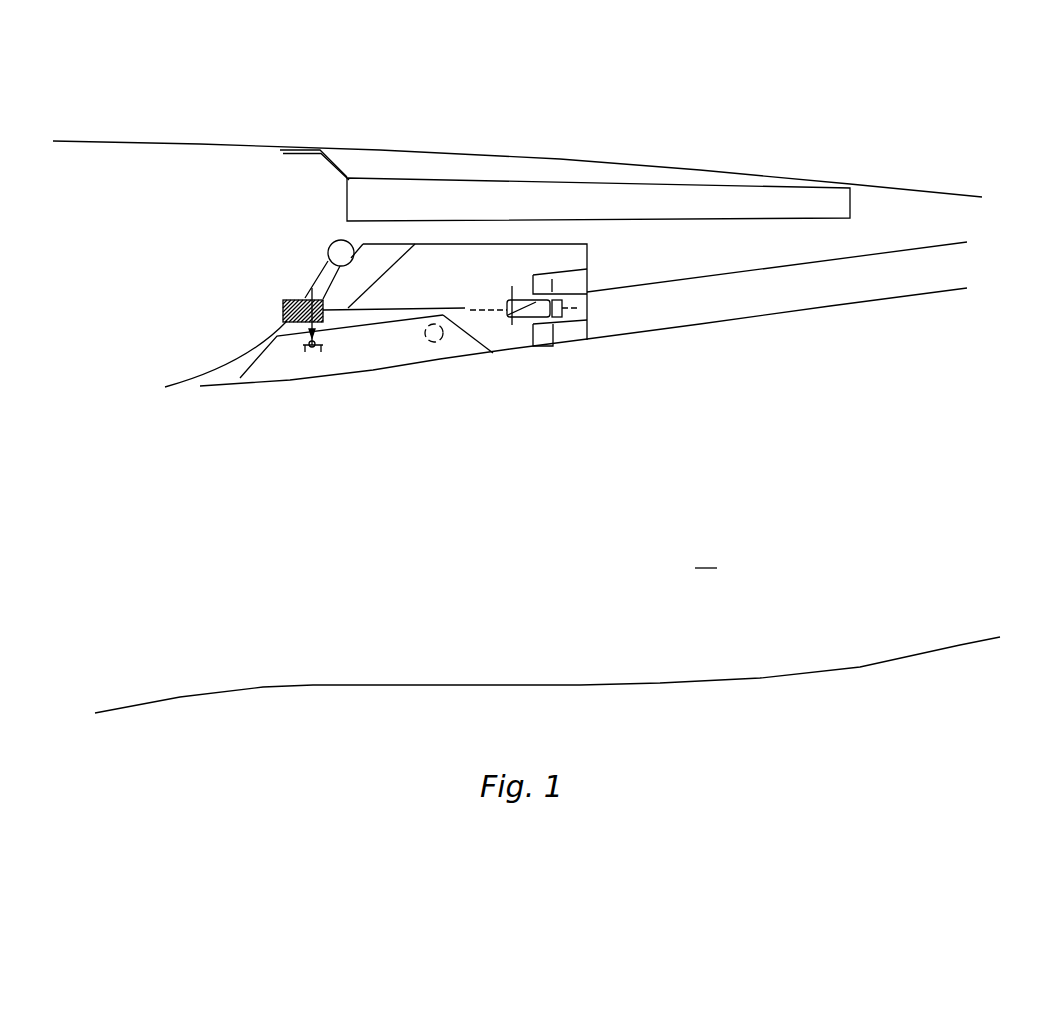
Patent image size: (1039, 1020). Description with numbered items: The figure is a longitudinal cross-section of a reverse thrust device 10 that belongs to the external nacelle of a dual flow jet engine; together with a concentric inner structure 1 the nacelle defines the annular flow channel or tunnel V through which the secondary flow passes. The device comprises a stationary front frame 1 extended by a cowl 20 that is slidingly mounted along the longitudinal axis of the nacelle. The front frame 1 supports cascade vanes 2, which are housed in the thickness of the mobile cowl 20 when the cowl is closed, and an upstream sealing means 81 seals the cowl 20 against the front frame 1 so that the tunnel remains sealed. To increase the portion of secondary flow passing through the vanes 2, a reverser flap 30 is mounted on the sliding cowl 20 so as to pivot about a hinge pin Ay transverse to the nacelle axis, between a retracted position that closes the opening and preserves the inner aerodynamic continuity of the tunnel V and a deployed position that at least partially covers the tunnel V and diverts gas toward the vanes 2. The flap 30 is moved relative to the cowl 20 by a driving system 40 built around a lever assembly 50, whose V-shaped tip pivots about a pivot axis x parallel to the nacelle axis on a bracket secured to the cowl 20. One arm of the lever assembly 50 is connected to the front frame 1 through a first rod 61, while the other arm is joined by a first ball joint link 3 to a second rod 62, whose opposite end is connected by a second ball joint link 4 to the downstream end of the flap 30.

The front frame 1 is at (180, 380).
The cascade vanes 2 is at (387, 197).
The first ball joint link 3 is at (548, 325).
The second ball joint link 4 is at (433, 356).
The reverse thrust device 10 is at (908, 174).
The cowl 20 is at (463, 150).
The reverser flap 30 is at (332, 390).
The driving system 40 is at (498, 338).
The lever assembly 50 is at (527, 323).
The first rod 61 is at (465, 308).
The second rod 62 is at (460, 330).
The upstream sealing means 81 is at (333, 247).
The hinge pin Ay is at (305, 358).
The pivot axis x is at (560, 338).
The annular flow channel V is at (706, 555).